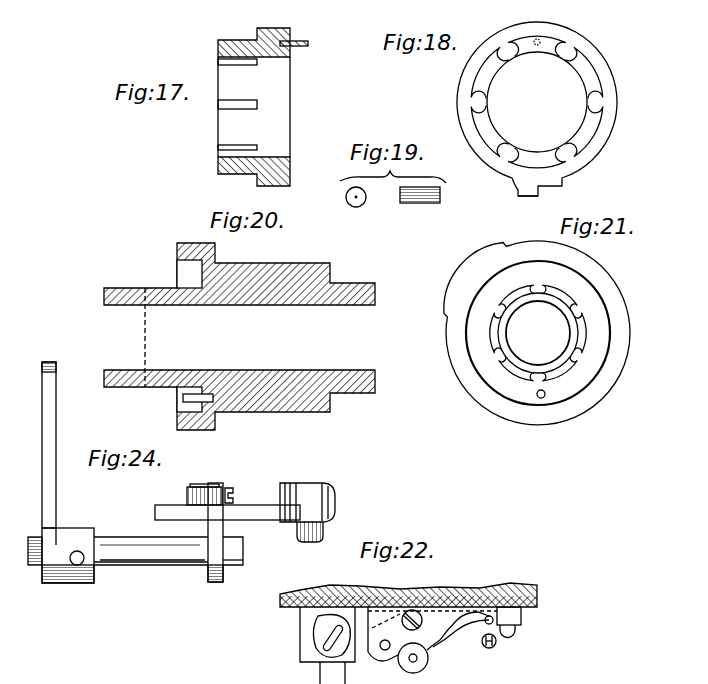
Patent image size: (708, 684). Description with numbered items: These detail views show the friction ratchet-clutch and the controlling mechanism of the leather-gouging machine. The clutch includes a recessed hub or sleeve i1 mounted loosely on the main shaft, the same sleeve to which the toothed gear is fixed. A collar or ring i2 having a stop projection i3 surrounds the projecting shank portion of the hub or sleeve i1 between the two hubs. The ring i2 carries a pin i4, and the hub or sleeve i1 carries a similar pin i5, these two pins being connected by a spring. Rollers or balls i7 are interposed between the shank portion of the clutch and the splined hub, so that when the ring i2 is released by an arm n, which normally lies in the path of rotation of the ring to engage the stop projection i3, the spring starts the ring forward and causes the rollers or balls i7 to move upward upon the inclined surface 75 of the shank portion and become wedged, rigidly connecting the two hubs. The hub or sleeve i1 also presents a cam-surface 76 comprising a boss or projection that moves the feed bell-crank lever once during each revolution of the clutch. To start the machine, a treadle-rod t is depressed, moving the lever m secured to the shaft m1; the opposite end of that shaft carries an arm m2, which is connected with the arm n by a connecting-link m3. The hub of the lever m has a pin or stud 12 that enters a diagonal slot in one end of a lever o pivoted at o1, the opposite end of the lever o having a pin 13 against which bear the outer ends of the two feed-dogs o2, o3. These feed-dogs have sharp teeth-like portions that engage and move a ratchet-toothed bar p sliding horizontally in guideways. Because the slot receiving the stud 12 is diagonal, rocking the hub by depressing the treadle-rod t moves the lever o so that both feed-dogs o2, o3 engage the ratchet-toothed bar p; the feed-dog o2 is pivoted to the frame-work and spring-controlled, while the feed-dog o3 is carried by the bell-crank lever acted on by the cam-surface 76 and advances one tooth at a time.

In FIG. 20, the recessed hub or sleeve i1 is at (296, 406).
In FIG. 21, the recessed hub or sleeve i1 is at (608, 378).
In FIG. 17, the collar or ring i2 is at (273, 167).
In FIG. 18, the collar or ring i2 is at (607, 128).
In FIG. 18, the stop projection i3 is at (538, 191).
In FIG. 17, the pin i4 is at (308, 43).
In FIG. 20, the pin i5 is at (182, 400).
In FIG. 21, the pin i5 is at (539, 398).
In FIG. 19, the rollers or balls i7 is at (418, 203).
In FIG. 20, the inclined surface 75 is at (129, 290).
In FIG. 21, the inclined surface 75 is at (563, 296).
In FIG. 21, the cam-surface 76 is at (460, 268).
In FIG. 24, the lever m is at (50, 427).
In FIG. 22, the lever m is at (537, 611).
In FIG. 24, the shaft m1 is at (163, 560).
In FIG. 24, the arm m2 is at (225, 573).
In FIG. 24, the connecting-link m3 is at (200, 483).
In FIG. 24, the arm n is at (263, 500).
In FIG. 24, the pin or stud 12 is at (70, 568).
In FIG. 22, the pin or stud 12 is at (323, 643).
In FIG. 22, the pin 13 is at (487, 626).
In FIG. 22, the ratchet-toothed bar p is at (470, 590).
In FIG. 22, the treadle-rod t is at (517, 630).
In FIG. 22, the lever o is at (360, 655).
In FIG. 22, the pivot o1 is at (385, 651).
In FIG. 22, the feed-dog o2 is at (462, 624).
In FIG. 22, the feed-dog o3 is at (488, 676).